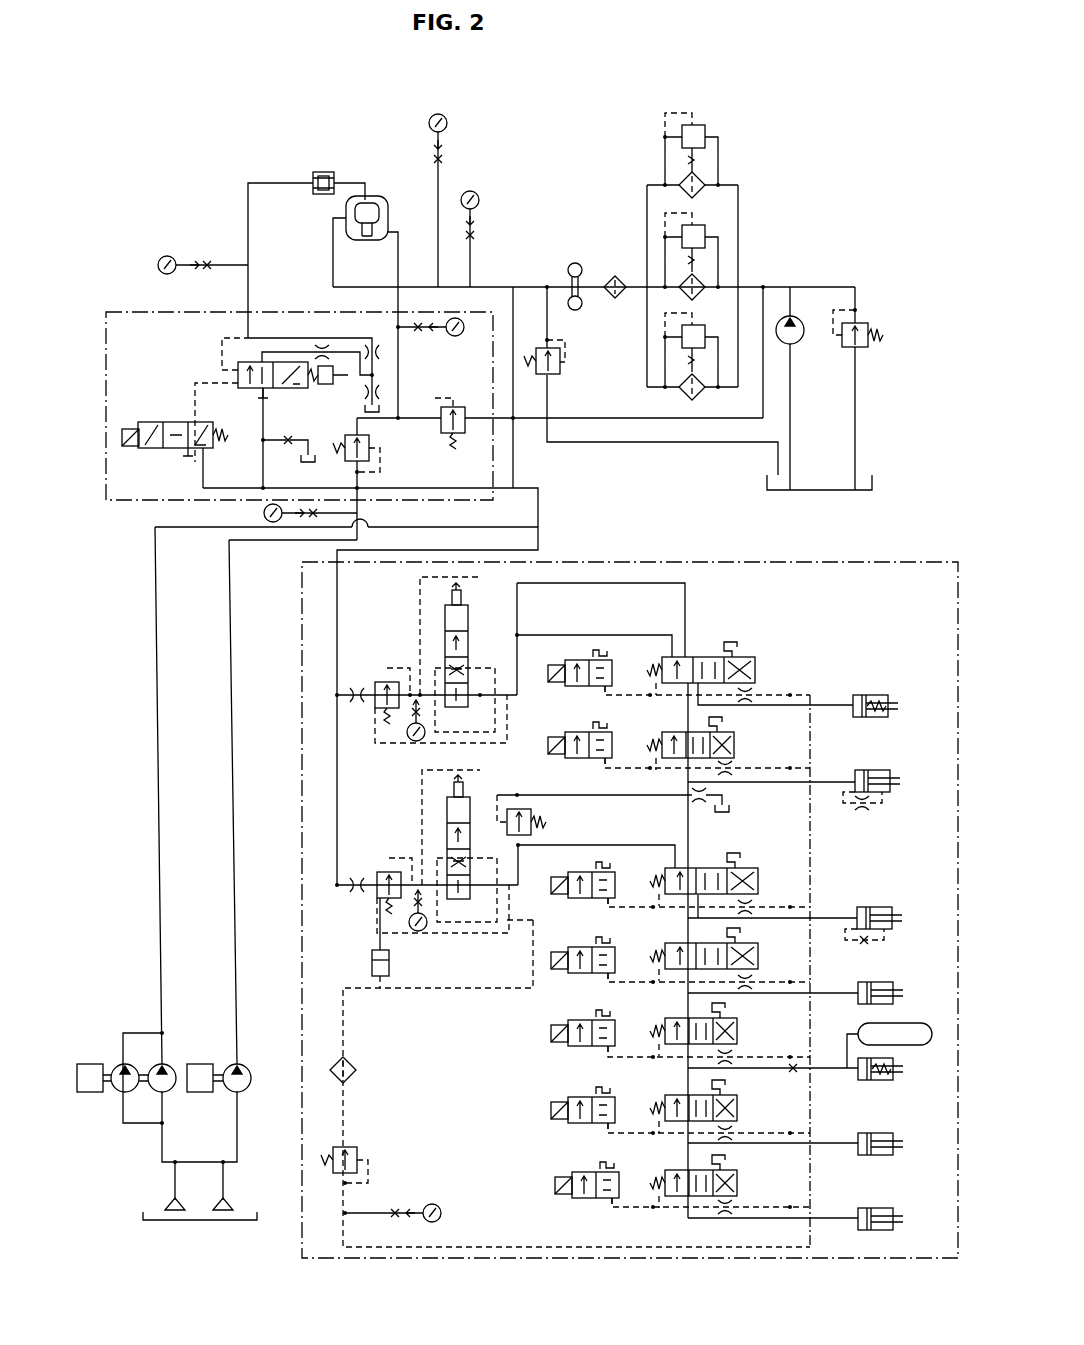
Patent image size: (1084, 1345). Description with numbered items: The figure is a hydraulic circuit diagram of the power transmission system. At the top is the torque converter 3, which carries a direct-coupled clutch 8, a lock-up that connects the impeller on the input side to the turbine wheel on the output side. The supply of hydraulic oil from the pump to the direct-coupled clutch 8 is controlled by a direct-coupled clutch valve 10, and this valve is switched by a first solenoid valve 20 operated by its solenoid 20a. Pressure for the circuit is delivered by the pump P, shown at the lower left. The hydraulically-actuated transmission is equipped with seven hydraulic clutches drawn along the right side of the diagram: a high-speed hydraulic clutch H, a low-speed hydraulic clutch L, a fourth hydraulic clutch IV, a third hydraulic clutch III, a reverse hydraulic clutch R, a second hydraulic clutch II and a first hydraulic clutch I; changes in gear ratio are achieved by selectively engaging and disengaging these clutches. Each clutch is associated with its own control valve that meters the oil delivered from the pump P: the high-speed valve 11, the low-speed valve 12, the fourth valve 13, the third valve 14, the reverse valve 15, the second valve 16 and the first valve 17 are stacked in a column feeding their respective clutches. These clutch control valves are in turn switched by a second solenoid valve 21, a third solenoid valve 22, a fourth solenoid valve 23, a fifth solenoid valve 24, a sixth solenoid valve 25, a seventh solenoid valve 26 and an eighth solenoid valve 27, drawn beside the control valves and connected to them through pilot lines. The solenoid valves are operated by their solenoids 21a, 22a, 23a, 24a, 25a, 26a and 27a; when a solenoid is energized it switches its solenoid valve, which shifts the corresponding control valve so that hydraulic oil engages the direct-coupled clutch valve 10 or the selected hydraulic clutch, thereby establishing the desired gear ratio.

The torque converter 3 is at (388, 218).
The direct-coupled clutch 8 is at (327, 172).
The direct-coupled clutch valve 10 is at (238, 375).
The first solenoid valve 20 is at (152, 422).
The solenoid 20a is at (130, 446).
The high-speed valve 11 is at (757, 672).
The low-speed valve 12 is at (734, 745).
The fourth valve 13 is at (758, 878).
The third valve 14 is at (758, 958).
The reverse valve 15 is at (737, 1032).
The second valve 16 is at (737, 1108).
The first valve 17 is at (737, 1182).
The second solenoid valve 21 is at (612, 672).
The solenoid 21a is at (550, 682).
The third solenoid valve 22 is at (612, 742).
The solenoid 22a is at (550, 754).
The fourth solenoid valve 23 is at (615, 884).
The solenoid 23a is at (553, 890).
The fifth solenoid valve 24 is at (615, 958).
The solenoid 24a is at (556, 970).
The sixth solenoid valve 25 is at (615, 1030).
The solenoid 25a is at (553, 1042).
The seventh solenoid valve 26 is at (615, 1106).
The solenoid 26a is at (553, 1118).
The eighth solenoid valve 27 is at (619, 1182).
The solenoid 27a is at (556, 1194).
The high-speed hydraulic clutch H is at (875, 696).
The low-speed hydraulic clutch L is at (880, 771).
The fourth hydraulic clutch IV is at (882, 908).
The third hydraulic clutch III is at (888, 982).
The reverse hydraulic clutch R is at (888, 1082).
The second hydraulic clutch II is at (888, 1156).
The first hydraulic clutch I is at (893, 1210).
The pump P is at (172, 1068).